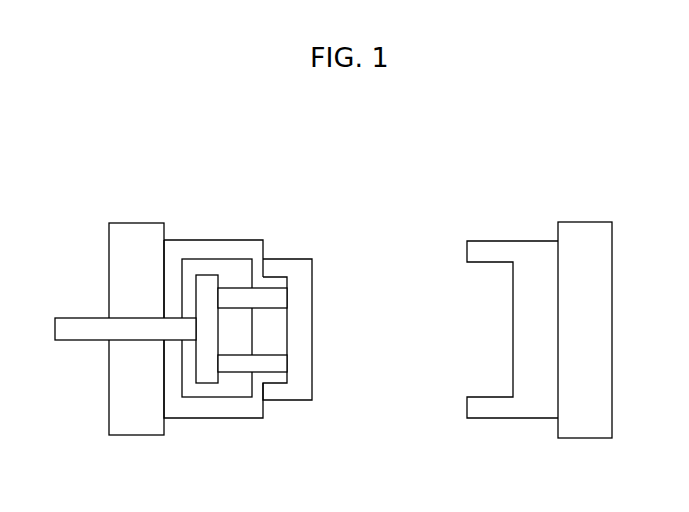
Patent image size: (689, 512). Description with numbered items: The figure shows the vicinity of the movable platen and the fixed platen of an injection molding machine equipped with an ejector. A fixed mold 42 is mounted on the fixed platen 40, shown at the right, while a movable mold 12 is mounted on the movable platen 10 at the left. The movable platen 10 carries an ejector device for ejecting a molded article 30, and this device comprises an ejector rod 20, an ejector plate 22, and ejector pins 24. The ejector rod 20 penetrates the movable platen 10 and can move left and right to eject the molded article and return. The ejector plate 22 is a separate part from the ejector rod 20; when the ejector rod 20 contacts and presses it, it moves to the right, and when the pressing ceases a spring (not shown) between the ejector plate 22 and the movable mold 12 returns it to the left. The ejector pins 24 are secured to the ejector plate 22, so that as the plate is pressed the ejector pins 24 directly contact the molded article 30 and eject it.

The movable platen 10 is at (137, 223).
The movable mold 12 is at (190, 240).
The ejector rod 20 is at (73, 318).
The ejector plate 22 is at (205, 275).
The ejector pins 24 is at (230, 308).
The molded article 30 is at (288, 259).
The fixed platen 40 is at (586, 222).
The fixed mold 42 is at (511, 241).